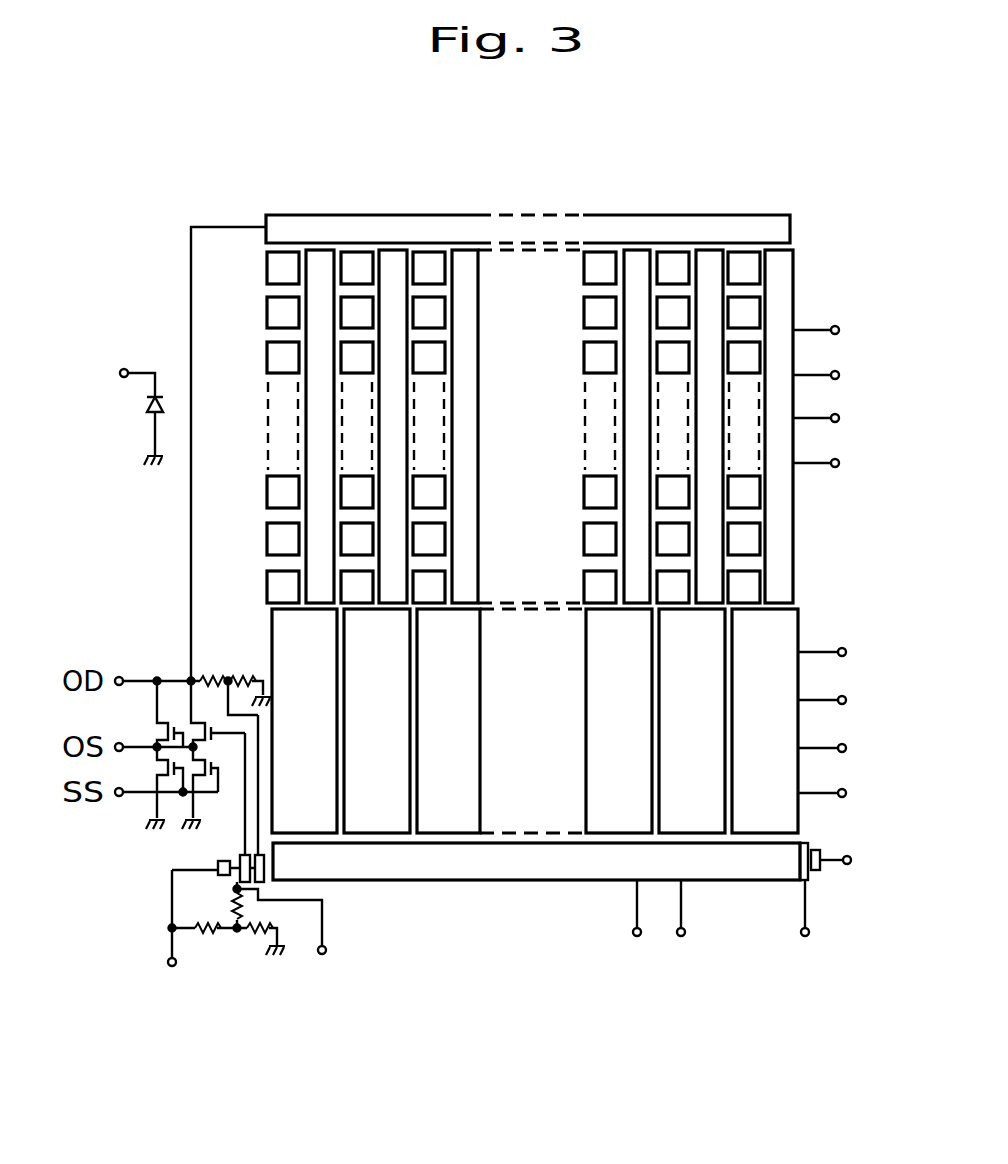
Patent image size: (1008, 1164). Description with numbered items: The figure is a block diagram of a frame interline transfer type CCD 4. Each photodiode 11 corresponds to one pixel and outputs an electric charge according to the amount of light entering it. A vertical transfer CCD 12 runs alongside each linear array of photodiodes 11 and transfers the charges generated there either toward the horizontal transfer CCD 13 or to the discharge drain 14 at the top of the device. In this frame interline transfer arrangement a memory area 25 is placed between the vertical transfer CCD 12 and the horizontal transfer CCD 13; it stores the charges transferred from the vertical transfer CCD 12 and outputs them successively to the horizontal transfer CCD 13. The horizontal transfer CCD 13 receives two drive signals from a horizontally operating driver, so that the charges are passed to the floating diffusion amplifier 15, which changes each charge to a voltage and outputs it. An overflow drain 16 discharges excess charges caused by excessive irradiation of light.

The CCD 4 is at (165, 263).
The photodiode 11 is at (277, 313).
The vertical transfer CCD 12 is at (320, 258).
The horizontal transfer CCD 13 is at (419, 881).
The discharge drain 14 is at (688, 228).
The floating diffusion amplifier 15 is at (246, 853).
The overflow drain 16 is at (146, 403).
The memory area 25 is at (294, 654).